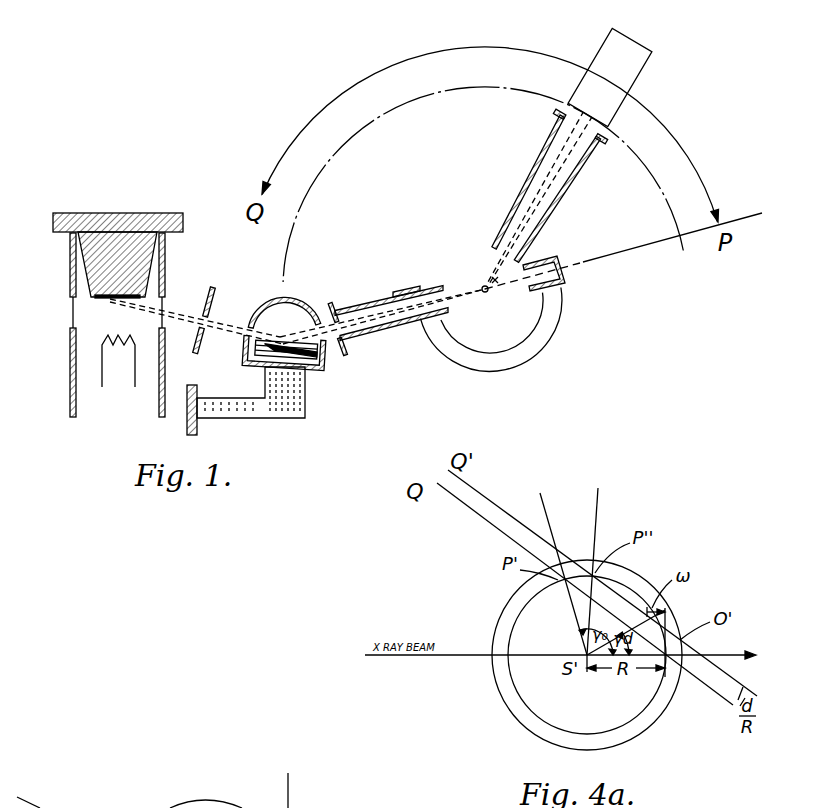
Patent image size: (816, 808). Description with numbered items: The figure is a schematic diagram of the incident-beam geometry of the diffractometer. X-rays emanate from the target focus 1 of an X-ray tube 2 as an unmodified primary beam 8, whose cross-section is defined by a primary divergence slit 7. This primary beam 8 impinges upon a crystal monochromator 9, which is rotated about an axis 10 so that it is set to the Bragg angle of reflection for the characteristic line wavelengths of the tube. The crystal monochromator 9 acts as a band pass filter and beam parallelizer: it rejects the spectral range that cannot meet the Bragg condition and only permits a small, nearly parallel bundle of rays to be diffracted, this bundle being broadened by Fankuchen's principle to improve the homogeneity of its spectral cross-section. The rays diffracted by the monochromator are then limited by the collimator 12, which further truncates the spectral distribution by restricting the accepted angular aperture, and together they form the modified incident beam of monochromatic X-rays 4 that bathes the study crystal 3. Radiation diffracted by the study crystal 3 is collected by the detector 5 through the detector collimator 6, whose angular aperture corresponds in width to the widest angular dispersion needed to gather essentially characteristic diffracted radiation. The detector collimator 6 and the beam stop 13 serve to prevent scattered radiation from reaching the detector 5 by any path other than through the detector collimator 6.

The target focus 1 is at (107, 298).
The X-ray tube 2 is at (97, 213).
The study crystal 3 is at (483, 285).
The monochromatic X-rays 4 is at (362, 332).
The detector 5 is at (642, 80).
The detector collimator 6 is at (548, 202).
The primary divergence slit 7 is at (213, 302).
The primary beam 8 is at (173, 312).
The crystal monochromator 9 is at (247, 358).
The axis 10 is at (303, 353).
The collimator 12 is at (387, 332).
The beam stop 13 is at (558, 290).